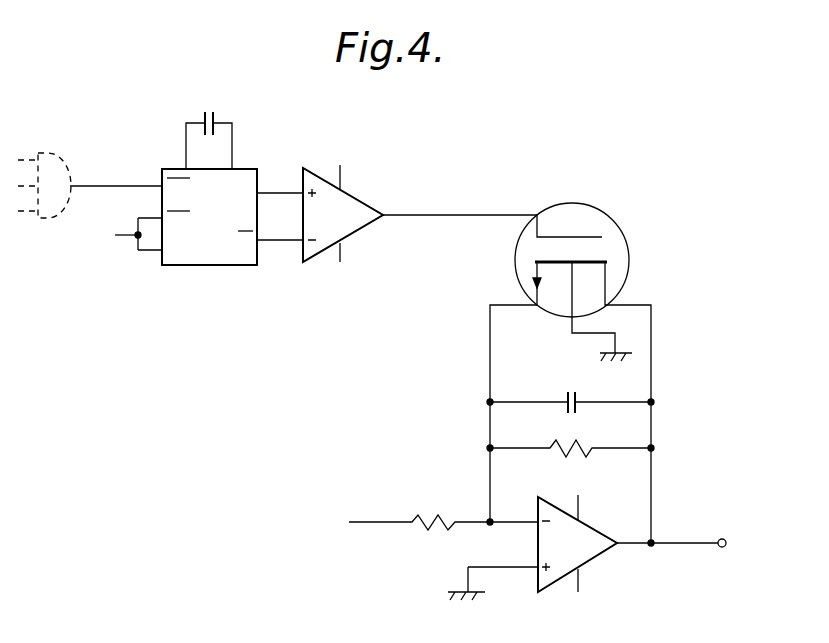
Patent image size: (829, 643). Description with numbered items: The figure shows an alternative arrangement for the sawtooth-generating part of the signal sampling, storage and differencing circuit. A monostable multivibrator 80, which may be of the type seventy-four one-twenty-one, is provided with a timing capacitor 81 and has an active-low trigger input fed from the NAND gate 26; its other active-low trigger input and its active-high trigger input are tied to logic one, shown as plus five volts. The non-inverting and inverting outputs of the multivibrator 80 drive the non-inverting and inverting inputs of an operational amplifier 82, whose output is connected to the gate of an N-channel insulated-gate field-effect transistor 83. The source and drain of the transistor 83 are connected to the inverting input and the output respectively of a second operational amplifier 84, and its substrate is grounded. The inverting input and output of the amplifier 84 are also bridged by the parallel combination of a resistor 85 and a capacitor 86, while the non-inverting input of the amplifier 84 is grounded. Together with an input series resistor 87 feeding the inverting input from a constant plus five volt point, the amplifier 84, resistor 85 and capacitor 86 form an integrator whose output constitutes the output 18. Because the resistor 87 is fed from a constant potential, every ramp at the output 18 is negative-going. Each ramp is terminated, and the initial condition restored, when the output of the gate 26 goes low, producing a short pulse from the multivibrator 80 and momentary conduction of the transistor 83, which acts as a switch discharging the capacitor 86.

The output 18 is at (718, 540).
The NAND gate 26 is at (72, 161).
The monostable multivibrator 80 is at (208, 262).
The timing capacitor 81 is at (215, 115).
The operational amplifier 82 is at (363, 225).
The field-effect transistor 83 is at (618, 248).
The operational amplifier 84 is at (592, 553).
The resistor 85 is at (573, 443).
The capacitor 86 is at (565, 395).
The resistor 87 is at (438, 515).